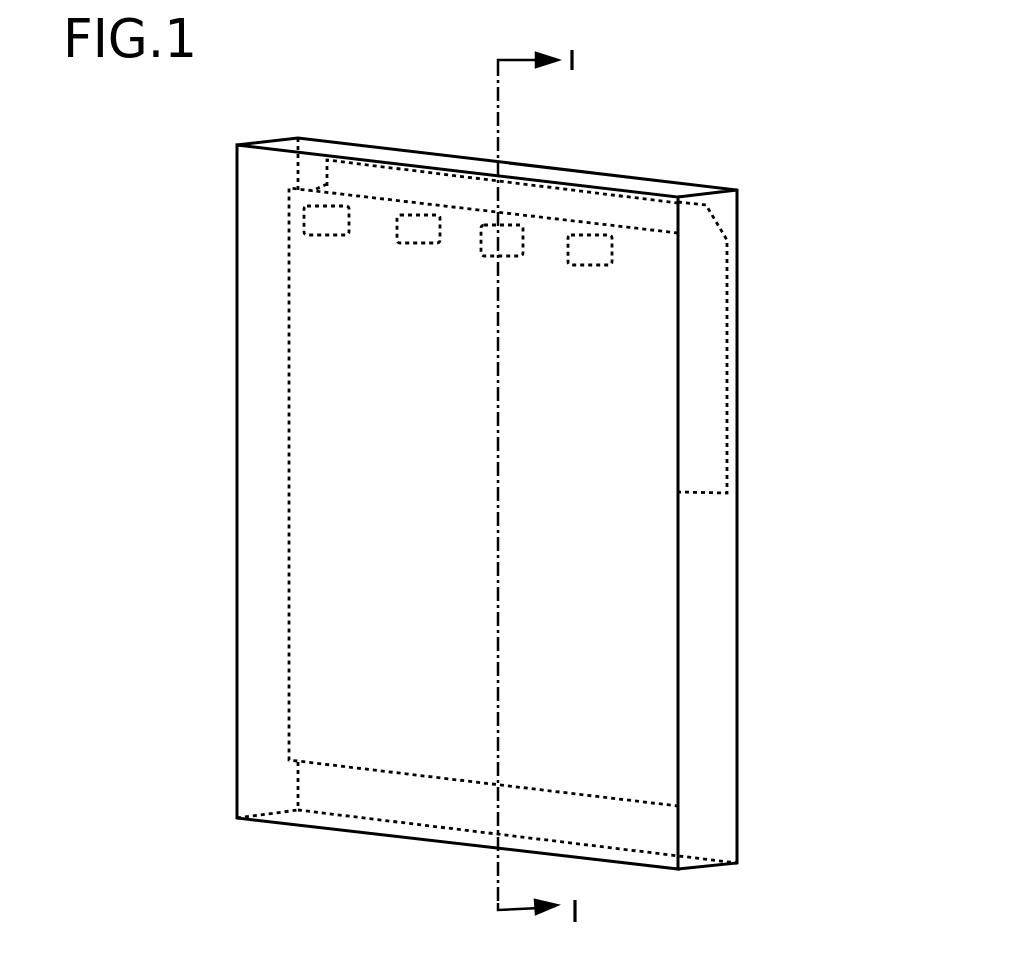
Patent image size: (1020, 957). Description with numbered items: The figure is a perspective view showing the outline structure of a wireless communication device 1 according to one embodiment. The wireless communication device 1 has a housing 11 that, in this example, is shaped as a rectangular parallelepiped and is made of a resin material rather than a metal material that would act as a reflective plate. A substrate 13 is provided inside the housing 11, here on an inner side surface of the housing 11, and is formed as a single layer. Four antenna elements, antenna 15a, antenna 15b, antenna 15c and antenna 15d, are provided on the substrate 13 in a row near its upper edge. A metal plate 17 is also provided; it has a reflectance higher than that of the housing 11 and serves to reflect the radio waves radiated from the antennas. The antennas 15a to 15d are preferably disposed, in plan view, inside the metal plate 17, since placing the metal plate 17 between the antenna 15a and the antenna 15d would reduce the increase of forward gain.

The wireless communication device 1 is at (712, 92).
The housing 11 is at (737, 654).
The substrate 13 is at (288, 580).
The antenna 15a is at (338, 207).
The antenna 15b is at (420, 215).
The antenna 15c is at (522, 232).
The antenna 15d is at (590, 237).
The metal plate 17 is at (727, 350).